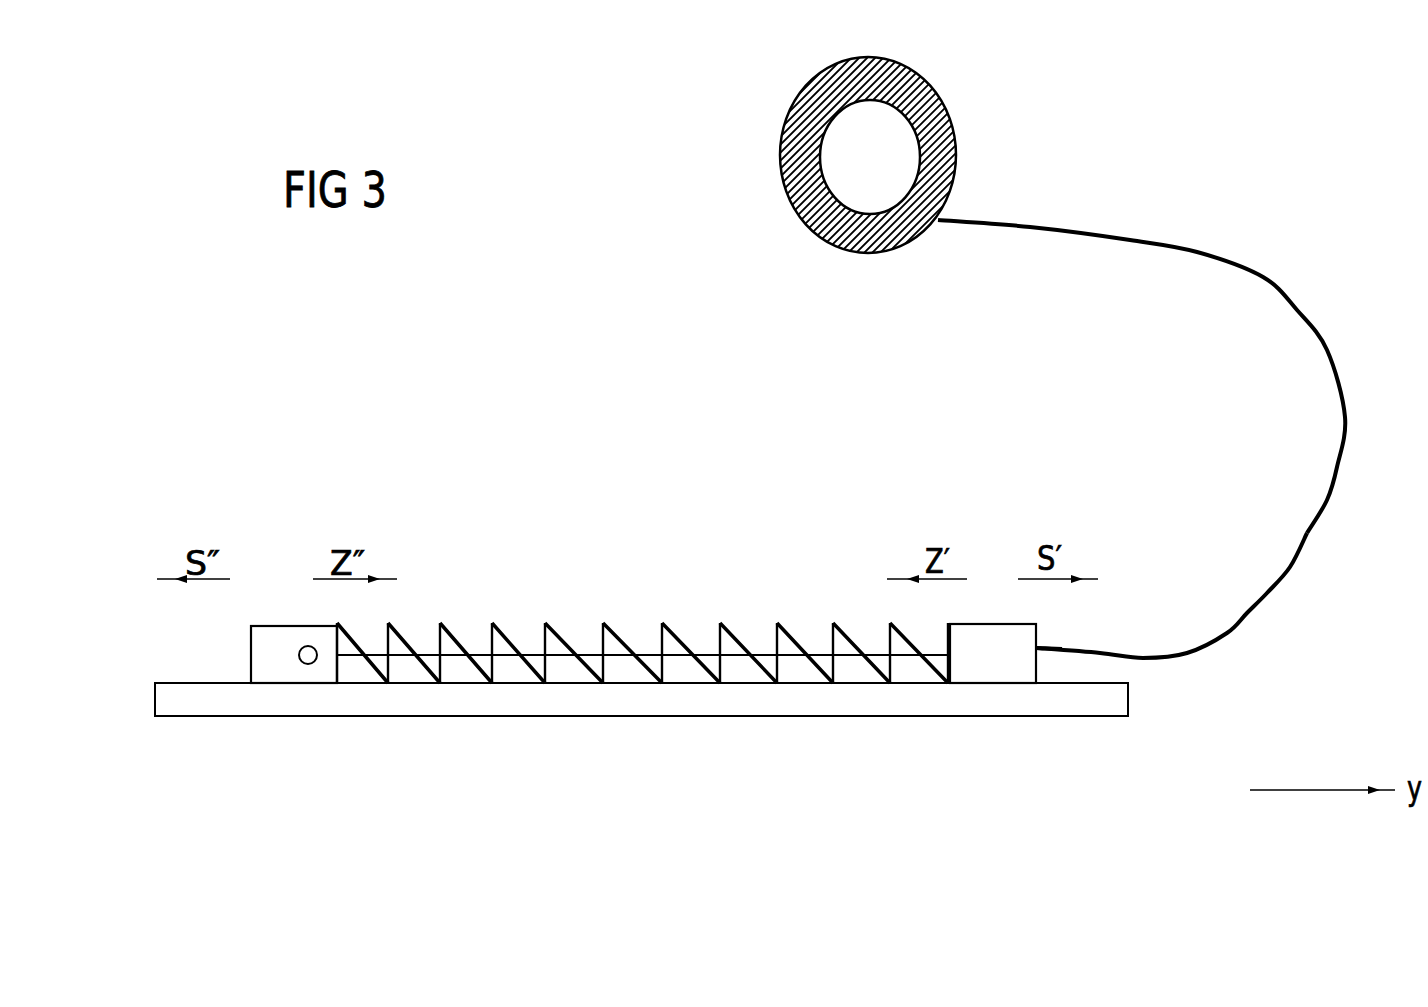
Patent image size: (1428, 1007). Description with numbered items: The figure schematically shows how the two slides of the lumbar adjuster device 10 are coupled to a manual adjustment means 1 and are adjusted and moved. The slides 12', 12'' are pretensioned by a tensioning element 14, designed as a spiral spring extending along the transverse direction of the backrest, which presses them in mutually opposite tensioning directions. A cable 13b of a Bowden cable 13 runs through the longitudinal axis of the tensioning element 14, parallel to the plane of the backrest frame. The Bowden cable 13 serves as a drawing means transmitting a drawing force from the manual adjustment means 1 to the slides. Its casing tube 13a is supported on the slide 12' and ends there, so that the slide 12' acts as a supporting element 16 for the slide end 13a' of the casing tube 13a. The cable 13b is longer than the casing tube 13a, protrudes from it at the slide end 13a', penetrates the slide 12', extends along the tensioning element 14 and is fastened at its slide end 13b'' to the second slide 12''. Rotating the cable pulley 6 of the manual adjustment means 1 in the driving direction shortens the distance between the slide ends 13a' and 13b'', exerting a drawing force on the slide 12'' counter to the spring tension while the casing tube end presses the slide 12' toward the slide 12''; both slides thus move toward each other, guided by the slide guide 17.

The manual adjustment means 1 is at (790, 130).
The cable pulley 6 is at (887, 157).
The lumbar adjuster device 10 is at (150, 663).
The slide 12' is at (993, 587).
The second slide 12'' is at (294, 592).
The Bowden cable 13 is at (1267, 278).
The casing tube 13a is at (1204, 595).
The slide end of the casing tube 13a' is at (1104, 623).
The cable 13b is at (643, 733).
The slide end of the cable 13b'' is at (287, 726).
The tensioning element 14 is at (547, 627).
The supporting element 16 is at (995, 662).
The slide guide 17 is at (662, 700).